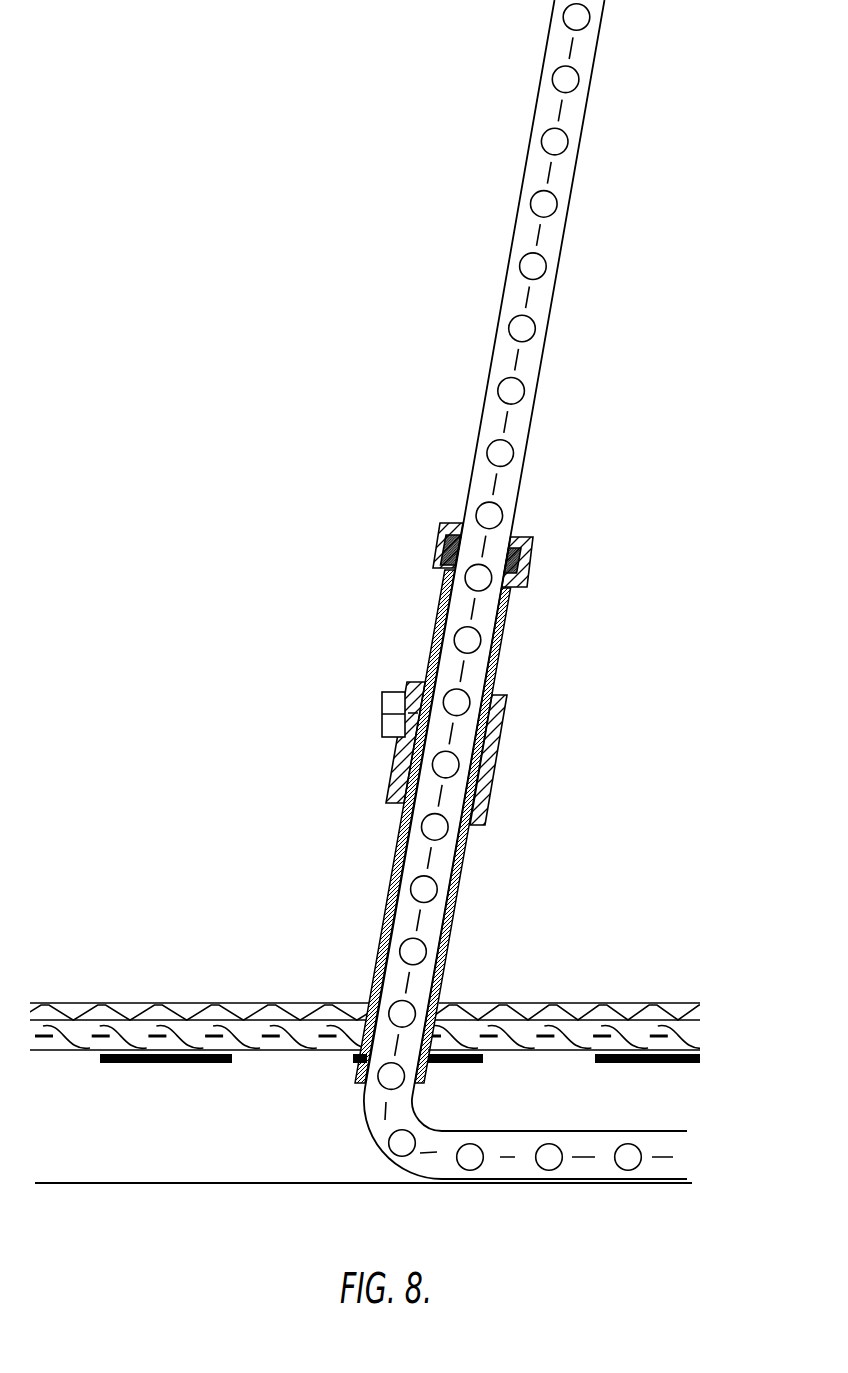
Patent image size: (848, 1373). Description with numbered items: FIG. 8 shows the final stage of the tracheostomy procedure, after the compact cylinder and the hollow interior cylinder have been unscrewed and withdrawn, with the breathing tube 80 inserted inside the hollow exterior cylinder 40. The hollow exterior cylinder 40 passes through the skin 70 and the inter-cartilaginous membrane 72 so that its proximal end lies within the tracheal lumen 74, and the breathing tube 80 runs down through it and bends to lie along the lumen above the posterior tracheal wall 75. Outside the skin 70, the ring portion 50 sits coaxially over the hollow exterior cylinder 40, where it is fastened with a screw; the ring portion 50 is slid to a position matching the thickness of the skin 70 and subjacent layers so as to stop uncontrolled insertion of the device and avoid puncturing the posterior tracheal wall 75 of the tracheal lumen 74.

The breathing tube 80 is at (482, 408).
The hollow exterior cylinder 40 is at (508, 610).
The ring portion 50 is at (387, 797).
The skin 70 is at (538, 1012).
The inter-cartilaginous membrane 72 is at (635, 1030).
The tracheal lumen 74 is at (685, 1095).
The posterior tracheal wall 75 is at (227, 1184).